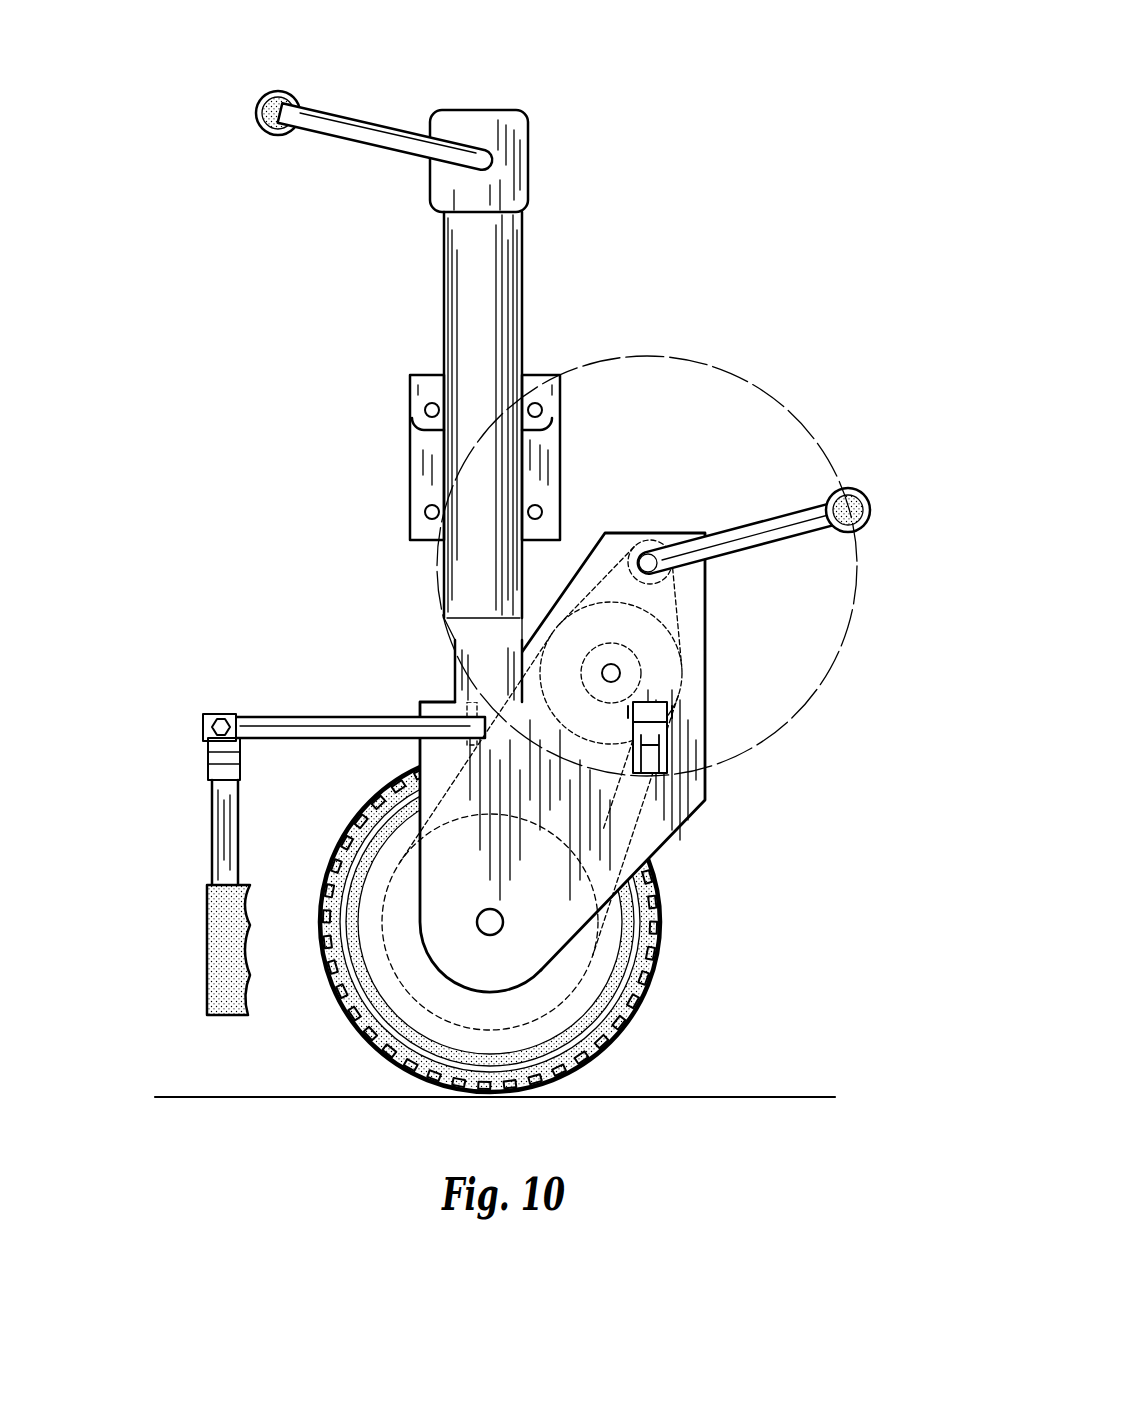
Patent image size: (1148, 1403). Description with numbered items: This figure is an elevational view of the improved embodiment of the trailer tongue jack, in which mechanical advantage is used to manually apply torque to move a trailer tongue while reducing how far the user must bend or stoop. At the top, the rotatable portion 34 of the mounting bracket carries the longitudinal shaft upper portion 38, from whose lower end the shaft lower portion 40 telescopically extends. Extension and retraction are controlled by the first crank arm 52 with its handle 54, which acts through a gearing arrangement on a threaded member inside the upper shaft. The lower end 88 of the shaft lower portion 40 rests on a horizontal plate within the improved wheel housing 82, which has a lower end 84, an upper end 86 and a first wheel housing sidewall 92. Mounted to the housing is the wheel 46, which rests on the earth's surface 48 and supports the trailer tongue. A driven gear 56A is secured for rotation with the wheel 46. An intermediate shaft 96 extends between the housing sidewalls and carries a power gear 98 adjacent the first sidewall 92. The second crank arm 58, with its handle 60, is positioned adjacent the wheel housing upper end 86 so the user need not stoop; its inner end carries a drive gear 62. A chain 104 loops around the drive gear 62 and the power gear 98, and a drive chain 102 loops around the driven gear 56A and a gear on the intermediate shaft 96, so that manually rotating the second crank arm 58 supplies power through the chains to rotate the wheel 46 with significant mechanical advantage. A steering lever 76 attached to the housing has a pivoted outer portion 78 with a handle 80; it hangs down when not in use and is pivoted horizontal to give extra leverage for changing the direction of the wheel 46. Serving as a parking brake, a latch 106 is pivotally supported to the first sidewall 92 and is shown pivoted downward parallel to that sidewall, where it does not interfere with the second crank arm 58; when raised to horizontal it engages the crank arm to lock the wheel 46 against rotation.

The rotatable portion 34 is at (415, 385).
The shaft upper portion 38 is at (500, 278).
The shaft lower portion 40 is at (465, 672).
The wheel 46 is at (607, 1015).
The earth's surface 48 is at (733, 1096).
The first crank arm 52 is at (363, 123).
The handle 54 is at (270, 110).
The driven gear 56A is at (625, 952).
The second crank arm 58 is at (763, 523).
The handle 60 is at (847, 497).
The drive gear 62 is at (637, 540).
The steering lever 76 is at (318, 718).
The pivoted outer portion 78 is at (217, 820).
The handle 80 is at (218, 1000).
The wheel housing 82 is at (757, 766).
The lower end 84 is at (492, 990).
The upper end 86 is at (665, 530).
The lower end 88 is at (455, 703).
The first wheel housing sidewall 92 is at (695, 698).
The intermediate shaft 96 is at (614, 672).
The power gear 98 is at (660, 667).
The drive chain 102 is at (655, 832).
The chain 104 is at (677, 596).
The latch 106 is at (652, 735).